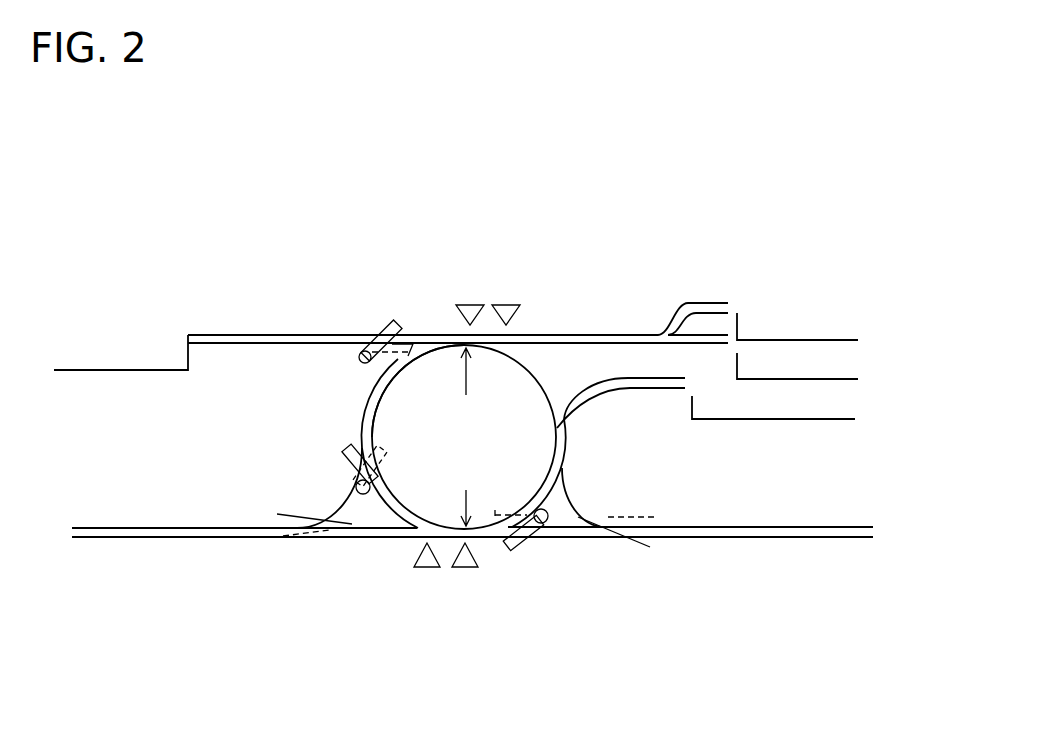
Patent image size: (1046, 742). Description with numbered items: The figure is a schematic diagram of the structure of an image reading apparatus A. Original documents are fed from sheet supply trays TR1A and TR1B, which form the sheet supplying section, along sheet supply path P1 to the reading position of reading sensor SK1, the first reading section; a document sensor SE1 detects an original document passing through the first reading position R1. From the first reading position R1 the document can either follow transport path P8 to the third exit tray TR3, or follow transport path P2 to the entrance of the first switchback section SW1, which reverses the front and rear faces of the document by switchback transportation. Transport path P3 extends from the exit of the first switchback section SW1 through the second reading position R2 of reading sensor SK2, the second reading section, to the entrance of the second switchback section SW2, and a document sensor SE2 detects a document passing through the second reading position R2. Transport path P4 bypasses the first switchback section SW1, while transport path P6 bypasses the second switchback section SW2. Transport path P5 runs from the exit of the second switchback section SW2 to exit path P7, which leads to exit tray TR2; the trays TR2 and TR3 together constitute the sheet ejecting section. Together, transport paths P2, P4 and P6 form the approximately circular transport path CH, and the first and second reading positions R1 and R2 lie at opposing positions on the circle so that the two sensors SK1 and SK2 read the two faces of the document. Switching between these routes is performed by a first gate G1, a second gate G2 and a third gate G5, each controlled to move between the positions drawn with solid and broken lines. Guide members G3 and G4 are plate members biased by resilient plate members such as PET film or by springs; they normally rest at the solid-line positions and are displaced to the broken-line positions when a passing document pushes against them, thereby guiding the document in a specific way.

The image reading apparatus A is at (481, 261).
The sheet ejecting tray TR3 is at (122, 370).
The sheet supply tray TR1A is at (800, 340).
The sheet supply tray TR1B is at (800, 379).
The sheet ejecting tray TR2 is at (800, 419).
The sheet supply path P1 is at (612, 333).
The transport path P2 is at (375, 384).
The transport path P3 is at (375, 540).
The transport path P4 is at (396, 492).
The transport path P5 is at (588, 492).
The transport path P6 is at (528, 500).
The exit path P7 is at (604, 386).
The transport path P8 is at (238, 343).
The circular transport path CH is at (430, 378).
The first reading position R1 is at (463, 382).
The second reading position R2 is at (463, 495).
The first gate G1 is at (346, 450).
The second gate G2 is at (540, 522).
The guide member G3 is at (330, 540).
The guide member G4 is at (636, 540).
The third gate G5 is at (356, 350).
The reading sensor SK1 is at (470, 303).
The document sensor SE1 is at (506, 303).
The reading sensor SK2 is at (465, 568).
The document sensor SE2 is at (427, 568).
The first switchback section SW1 is at (155, 528).
The second switchback section SW2 is at (787, 537).